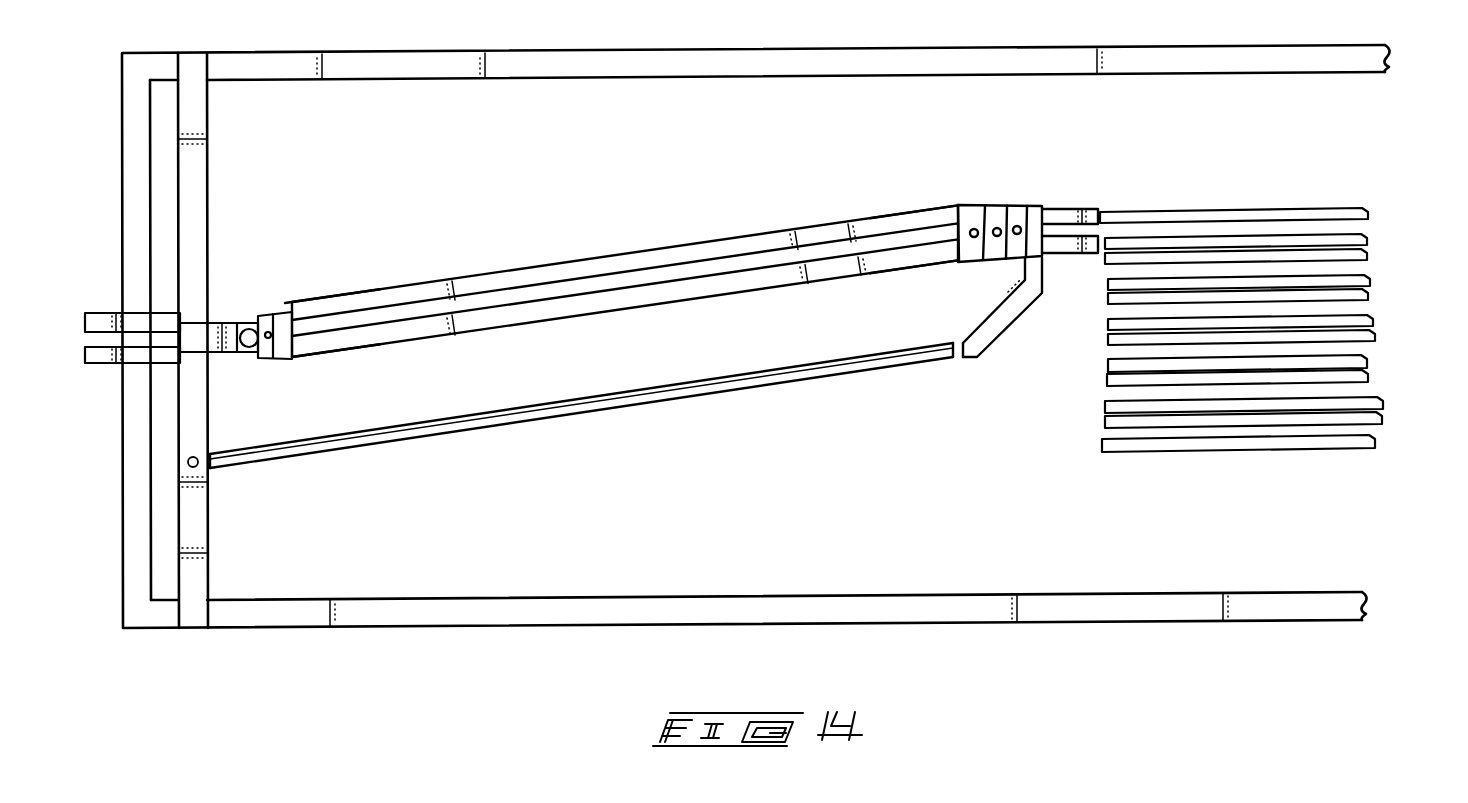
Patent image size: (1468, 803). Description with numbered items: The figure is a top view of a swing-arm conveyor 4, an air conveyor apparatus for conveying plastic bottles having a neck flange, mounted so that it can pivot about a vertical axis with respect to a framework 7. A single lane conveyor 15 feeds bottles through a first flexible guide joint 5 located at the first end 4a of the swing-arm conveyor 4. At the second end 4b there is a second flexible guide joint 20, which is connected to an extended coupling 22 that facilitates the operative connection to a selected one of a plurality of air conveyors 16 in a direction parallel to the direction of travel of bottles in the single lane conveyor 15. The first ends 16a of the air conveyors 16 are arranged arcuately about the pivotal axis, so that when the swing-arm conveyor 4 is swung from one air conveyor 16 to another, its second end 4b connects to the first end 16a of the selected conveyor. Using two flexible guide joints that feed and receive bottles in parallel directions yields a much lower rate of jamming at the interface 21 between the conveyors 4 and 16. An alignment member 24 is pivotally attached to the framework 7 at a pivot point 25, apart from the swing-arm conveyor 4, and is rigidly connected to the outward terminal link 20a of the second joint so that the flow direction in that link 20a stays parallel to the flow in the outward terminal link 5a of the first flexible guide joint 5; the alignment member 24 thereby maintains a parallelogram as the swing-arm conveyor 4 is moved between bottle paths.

The swing-arm conveyor 4 is at (640, 312).
The first end 4a is at (298, 302).
The second end 4b is at (935, 208).
The first flexible guide joint 5 is at (259, 294).
The outward terminal link 5a is at (217, 365).
The framework 7 is at (133, 228).
The single lane conveyor 15 is at (98, 365).
The air conveyors 16 is at (1273, 302).
The first ends 16a is at (1167, 210).
The second flexible guide joint 20 is at (1025, 234).
The outward terminal link 20a is at (1033, 213).
The interface 21 is at (1103, 213).
The extended coupling 22 is at (1058, 255).
The alignment member 24 is at (712, 380).
The pivot point 25 is at (194, 457).